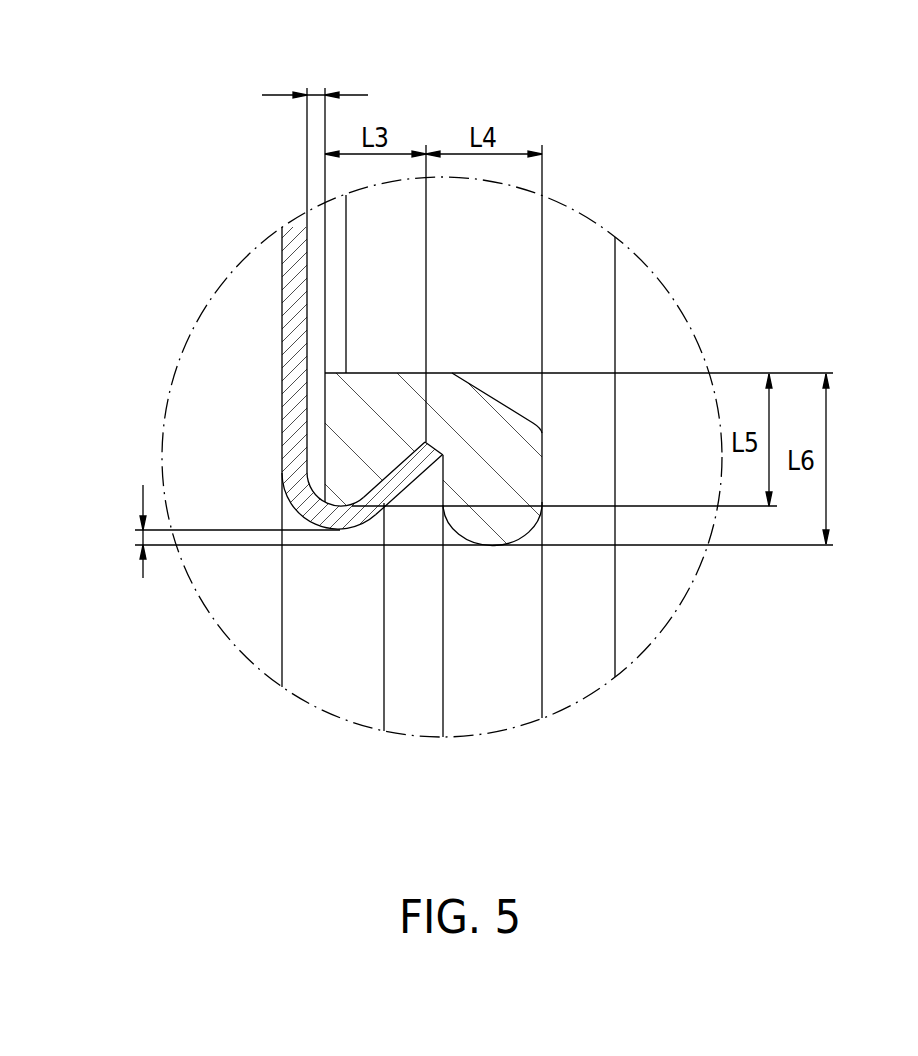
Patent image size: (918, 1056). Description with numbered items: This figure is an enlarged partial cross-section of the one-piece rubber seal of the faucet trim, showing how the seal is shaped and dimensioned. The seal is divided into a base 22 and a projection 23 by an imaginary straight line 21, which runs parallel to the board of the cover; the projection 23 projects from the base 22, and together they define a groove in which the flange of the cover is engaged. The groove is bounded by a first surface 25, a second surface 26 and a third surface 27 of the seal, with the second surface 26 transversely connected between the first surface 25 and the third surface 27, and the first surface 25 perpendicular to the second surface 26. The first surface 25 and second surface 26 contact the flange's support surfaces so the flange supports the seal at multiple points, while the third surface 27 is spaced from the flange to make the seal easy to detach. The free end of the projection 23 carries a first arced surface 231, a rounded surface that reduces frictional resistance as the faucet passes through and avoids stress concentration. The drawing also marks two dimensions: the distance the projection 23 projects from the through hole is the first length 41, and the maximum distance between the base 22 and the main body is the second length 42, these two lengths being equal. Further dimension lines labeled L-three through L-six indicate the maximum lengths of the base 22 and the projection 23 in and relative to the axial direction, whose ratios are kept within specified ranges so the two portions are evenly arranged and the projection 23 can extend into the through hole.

The imaginary straight line 21 is at (425, 413).
The base 22 is at (350, 435).
The projection 23 is at (581, 578).
The first arced surface 231 is at (522, 543).
The first surface 25 is at (397, 467).
The second surface 26 is at (434, 449).
The third surface 27 is at (442, 463).
The first length 41 is at (143, 538).
The second length 42 is at (318, 93).